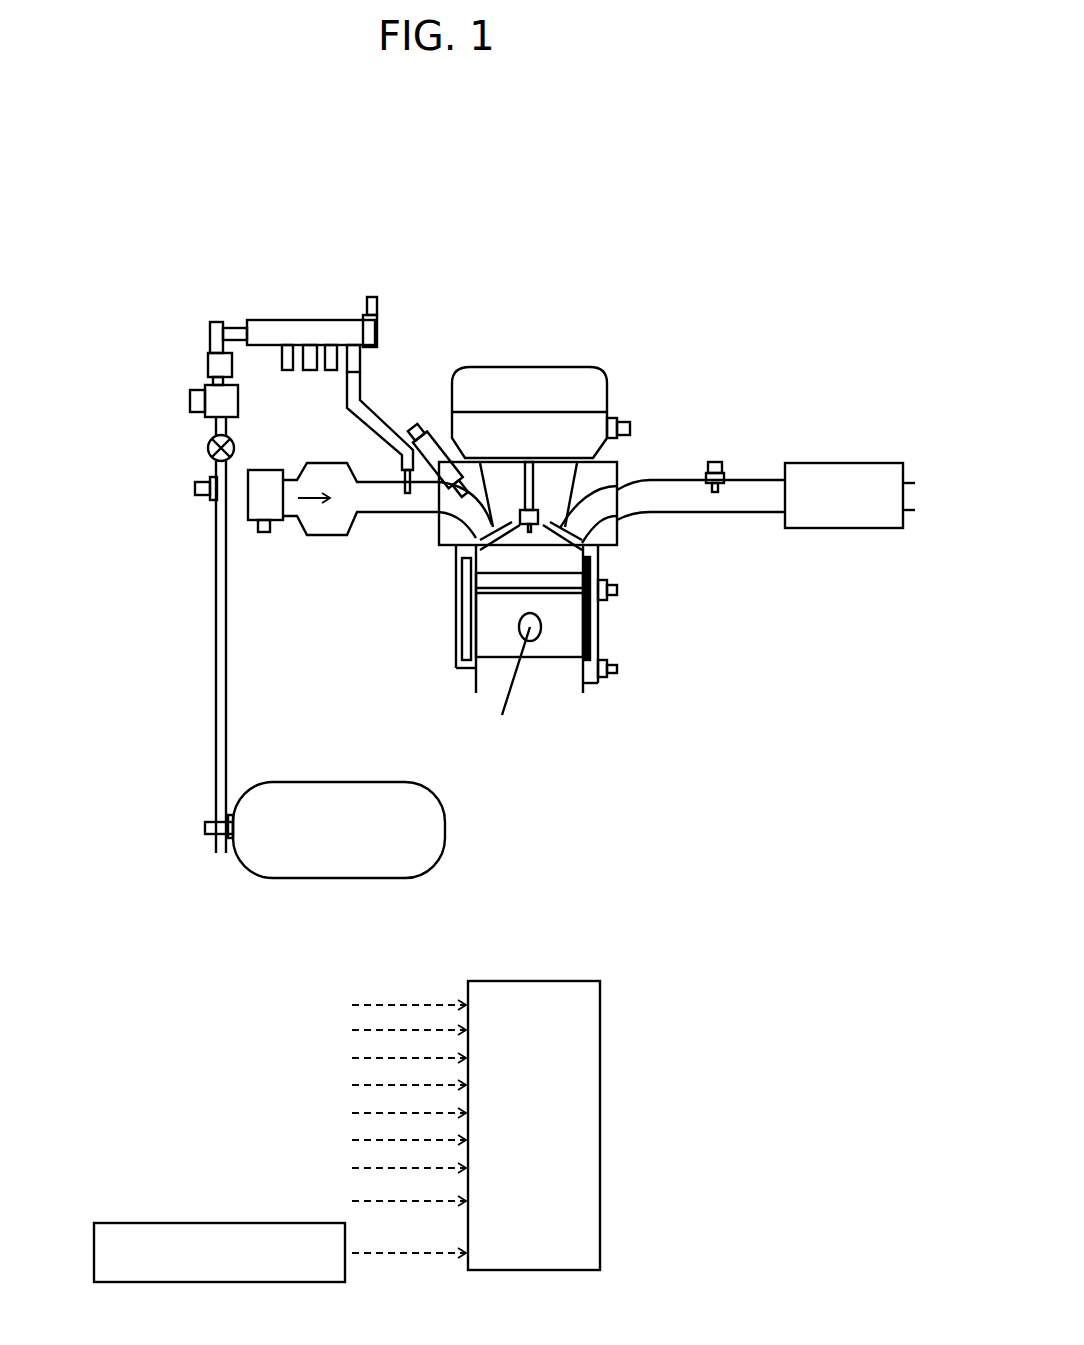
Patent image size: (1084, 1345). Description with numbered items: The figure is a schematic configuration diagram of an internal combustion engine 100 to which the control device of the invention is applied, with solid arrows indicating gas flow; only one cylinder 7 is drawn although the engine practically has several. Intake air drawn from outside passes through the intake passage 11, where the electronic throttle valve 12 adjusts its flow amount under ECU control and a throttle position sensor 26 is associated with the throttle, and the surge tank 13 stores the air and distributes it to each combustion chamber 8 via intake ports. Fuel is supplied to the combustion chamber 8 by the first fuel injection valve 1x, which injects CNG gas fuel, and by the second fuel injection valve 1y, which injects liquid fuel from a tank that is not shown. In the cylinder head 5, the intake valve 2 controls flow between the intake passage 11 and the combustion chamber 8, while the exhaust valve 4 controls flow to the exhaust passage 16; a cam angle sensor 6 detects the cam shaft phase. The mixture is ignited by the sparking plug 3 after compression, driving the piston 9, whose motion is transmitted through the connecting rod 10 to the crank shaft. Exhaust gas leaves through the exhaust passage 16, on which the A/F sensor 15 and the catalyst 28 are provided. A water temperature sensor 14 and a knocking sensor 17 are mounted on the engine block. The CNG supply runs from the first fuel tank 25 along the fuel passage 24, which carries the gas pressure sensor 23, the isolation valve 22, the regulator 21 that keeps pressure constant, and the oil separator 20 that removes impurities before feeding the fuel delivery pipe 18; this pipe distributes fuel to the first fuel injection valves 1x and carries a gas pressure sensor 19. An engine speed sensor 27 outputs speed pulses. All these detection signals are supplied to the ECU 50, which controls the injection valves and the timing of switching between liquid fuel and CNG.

The internal combustion engine 100 is at (507, 153).
The first fuel injection valve 1x is at (402, 430).
The second fuel injection valve 1y is at (445, 435).
The intake valve 2 is at (443, 514).
The sparking plug 3 is at (537, 481).
The exhaust valve 4 is at (600, 530).
The cylinder head 5 is at (658, 446).
The cam angle sensor 6 is at (612, 418).
The cylinder 7 is at (456, 667).
The combustion chamber 8 is at (537, 561).
The piston 9 is at (458, 640).
The connecting rod 10 is at (510, 698).
The intake passage 11 is at (386, 501).
The electronic throttle valve 12 is at (268, 470).
The surge tank 13 is at (323, 518).
The water temperature sensor 14 is at (617, 597).
The A/F sensor 15 is at (722, 468).
The exhaust passage 16 is at (753, 482).
The knocking sensor 17 is at (617, 675).
The fuel delivery pipe 18 is at (327, 332).
The gas pressure sensor 19 is at (378, 332).
The oil separator 20 is at (208, 358).
The regulator 21 is at (207, 388).
The isolation valve 22 is at (208, 447).
The gas pressure sensor 23 is at (193, 488).
The fuel passage 24 is at (217, 575).
The first fuel tank 25 is at (340, 783).
The throttle position sensor 26 is at (267, 530).
The engine speed sensor 27 is at (212, 1282).
The catalyst 28 is at (847, 462).
The ECU 50 is at (536, 979).